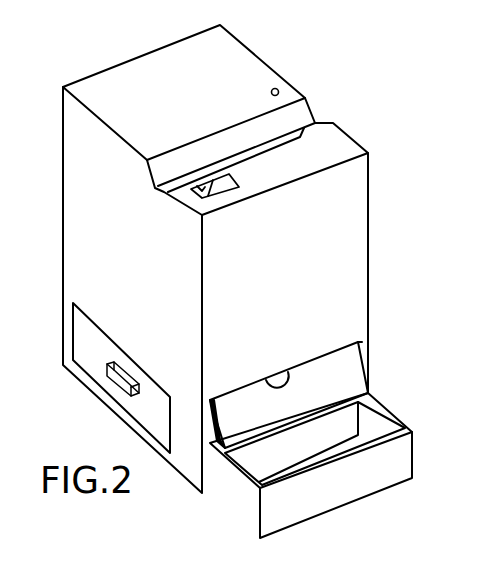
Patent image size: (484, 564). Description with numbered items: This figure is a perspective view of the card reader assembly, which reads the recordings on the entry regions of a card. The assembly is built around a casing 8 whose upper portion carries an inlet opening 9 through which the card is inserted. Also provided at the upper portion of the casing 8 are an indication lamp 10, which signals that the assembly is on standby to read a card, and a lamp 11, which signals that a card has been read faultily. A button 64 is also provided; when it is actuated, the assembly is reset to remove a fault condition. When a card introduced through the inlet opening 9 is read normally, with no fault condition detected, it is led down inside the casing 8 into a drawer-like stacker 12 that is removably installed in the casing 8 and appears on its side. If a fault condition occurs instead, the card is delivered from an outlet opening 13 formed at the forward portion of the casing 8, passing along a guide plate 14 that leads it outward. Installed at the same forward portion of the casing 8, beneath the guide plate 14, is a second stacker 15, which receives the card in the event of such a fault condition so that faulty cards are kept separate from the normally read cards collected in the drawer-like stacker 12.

The casing 8 is at (337, 283).
The inlet opening 9 is at (293, 128).
The indication lamp 10 is at (278, 88).
The lamp 11 is at (195, 199).
The button 64 is at (228, 188).
The drawer-like stacker 12 is at (95, 355).
The outlet opening 13 is at (289, 372).
The guide plate 14 is at (337, 385).
The second stacker 15 is at (387, 463).